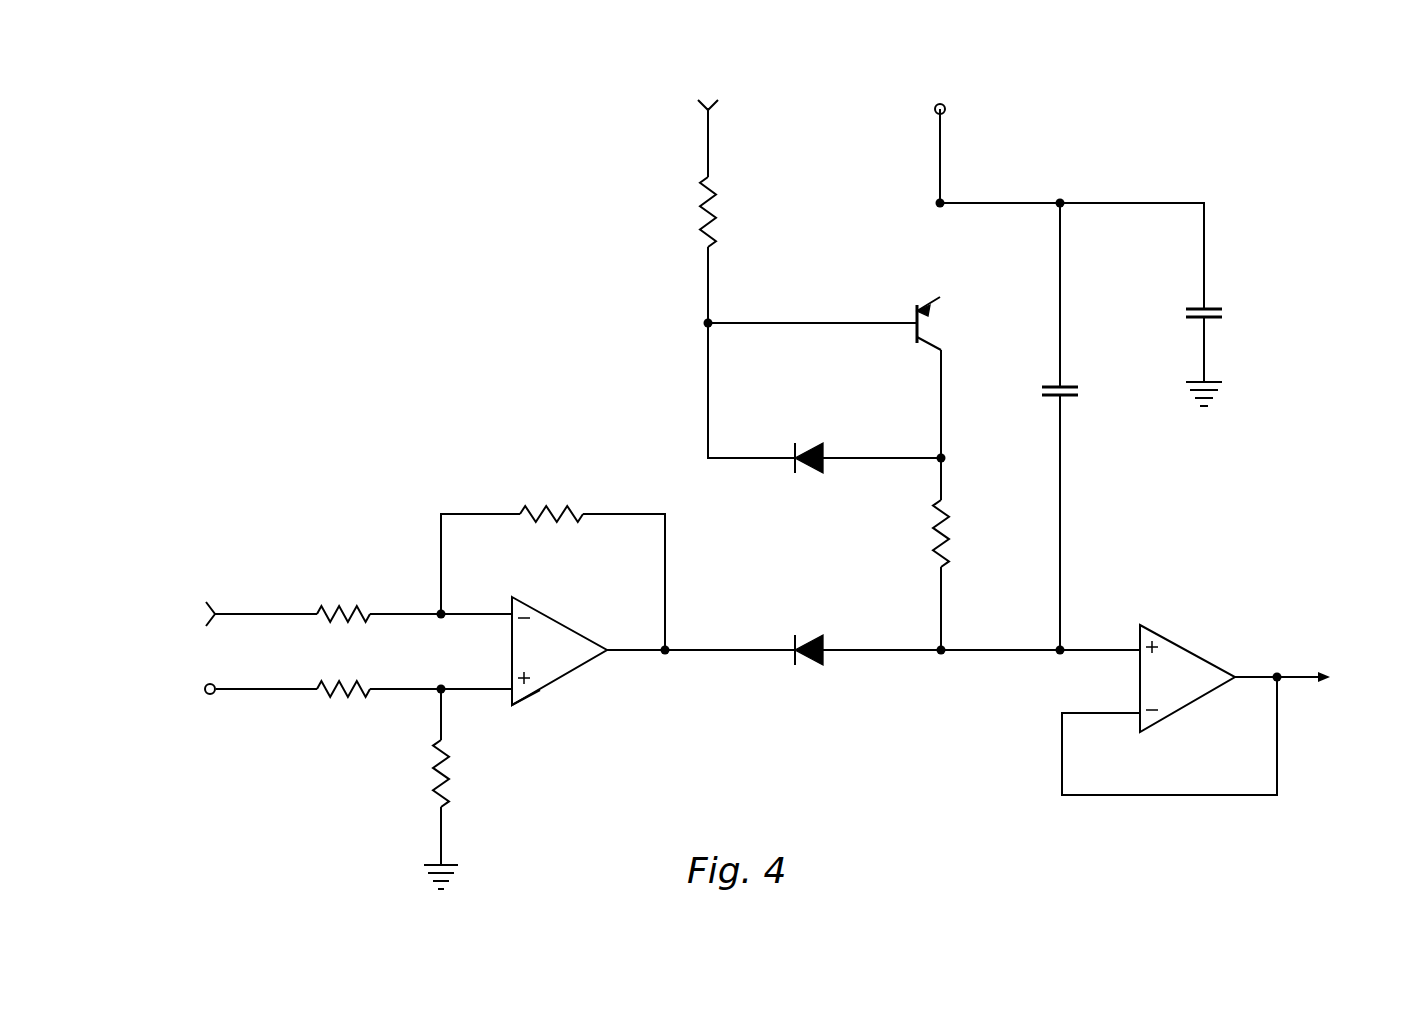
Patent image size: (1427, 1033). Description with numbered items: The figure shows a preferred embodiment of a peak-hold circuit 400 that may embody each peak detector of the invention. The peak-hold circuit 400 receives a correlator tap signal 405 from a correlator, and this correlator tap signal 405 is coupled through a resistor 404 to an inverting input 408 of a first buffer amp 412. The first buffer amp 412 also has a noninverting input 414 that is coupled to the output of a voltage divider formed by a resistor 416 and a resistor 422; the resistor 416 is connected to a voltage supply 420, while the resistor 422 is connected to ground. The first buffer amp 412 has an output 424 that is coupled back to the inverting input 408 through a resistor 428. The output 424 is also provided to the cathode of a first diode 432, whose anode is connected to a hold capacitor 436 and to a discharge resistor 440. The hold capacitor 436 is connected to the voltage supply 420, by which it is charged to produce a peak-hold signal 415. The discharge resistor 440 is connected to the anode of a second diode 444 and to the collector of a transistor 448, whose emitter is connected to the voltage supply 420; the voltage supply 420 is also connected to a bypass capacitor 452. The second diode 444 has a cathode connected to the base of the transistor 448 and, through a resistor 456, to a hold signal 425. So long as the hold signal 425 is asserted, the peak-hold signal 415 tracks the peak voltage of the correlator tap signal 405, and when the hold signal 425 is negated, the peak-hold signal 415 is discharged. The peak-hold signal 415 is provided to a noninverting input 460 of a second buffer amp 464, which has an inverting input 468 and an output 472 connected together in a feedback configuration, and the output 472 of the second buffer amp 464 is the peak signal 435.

The peak-hold circuit 400 is at (283, 800).
The resistor 404 is at (342, 607).
The correlator tap signal 405 is at (218, 610).
The inverting input 408 is at (512, 600).
The first buffer amp 412 is at (550, 690).
The noninverting input 414 is at (512, 692).
The peak-hold signal 415 is at (941, 655).
The resistor 416 is at (333, 697).
The voltage supply 420 is at (193, 695).
The resistor 422 is at (430, 787).
The output 424 is at (607, 652).
The hold signal 425 is at (697, 108).
The resistor 428 is at (533, 510).
The first diode 432 is at (812, 663).
The peak signal 435 is at (1307, 680).
The hold capacitor 436 is at (1080, 390).
The discharge resistor 440 is at (974, 529).
The second diode 444 is at (808, 470).
The transistor 448 is at (928, 322).
The bypass capacitor 452 is at (1222, 313).
The resistor 456 is at (705, 229).
The noninverting input 460 is at (1140, 642).
The second buffer amp 464 is at (1190, 650).
The inverting input 468 is at (1135, 712).
The output 472 is at (1235, 673).